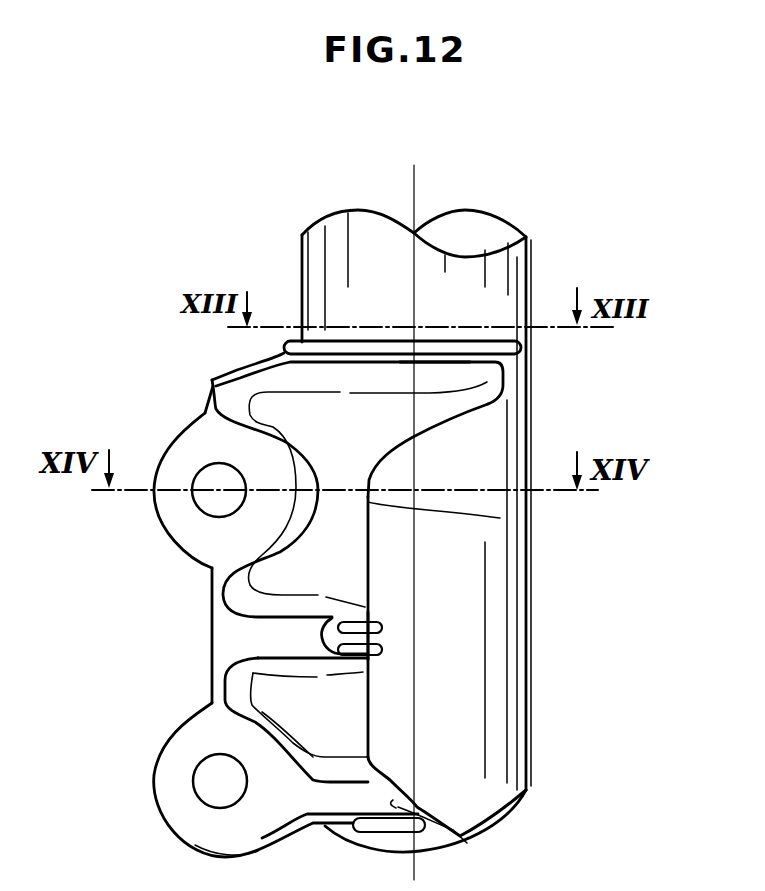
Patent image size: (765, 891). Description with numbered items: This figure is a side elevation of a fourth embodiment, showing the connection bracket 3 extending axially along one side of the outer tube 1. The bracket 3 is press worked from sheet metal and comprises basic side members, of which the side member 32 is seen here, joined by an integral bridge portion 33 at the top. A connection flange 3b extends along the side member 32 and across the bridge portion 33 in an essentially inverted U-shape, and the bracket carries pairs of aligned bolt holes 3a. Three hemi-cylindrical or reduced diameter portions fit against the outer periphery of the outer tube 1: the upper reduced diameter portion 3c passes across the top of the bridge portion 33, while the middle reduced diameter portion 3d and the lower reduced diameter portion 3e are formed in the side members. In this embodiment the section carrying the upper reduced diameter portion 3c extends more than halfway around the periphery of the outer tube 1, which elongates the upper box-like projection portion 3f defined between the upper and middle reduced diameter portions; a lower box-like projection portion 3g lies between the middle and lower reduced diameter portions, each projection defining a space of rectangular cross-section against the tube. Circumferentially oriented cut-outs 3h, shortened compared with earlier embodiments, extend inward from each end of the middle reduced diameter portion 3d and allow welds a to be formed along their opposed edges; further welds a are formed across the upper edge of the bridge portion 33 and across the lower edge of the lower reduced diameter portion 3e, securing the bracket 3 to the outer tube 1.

The outer tube 1 is at (514, 266).
The connection bracket 3 is at (211, 386).
The bolt holes 3a is at (242, 477).
The connection flange 3b is at (185, 453).
The upper reduced diameter portion 3c is at (443, 370).
The middle reduced diameter portion 3d is at (380, 618).
The lower reduced diameter portion 3e is at (463, 840).
The upper box-like projection portion 3f is at (438, 413).
The lower box-like projection portion 3g is at (353, 711).
The circumferentially oriented cut-outs 3h is at (337, 630).
The second side member 32 is at (500, 518).
The bridge portion 33 is at (244, 364).
The welds a is at (497, 348).